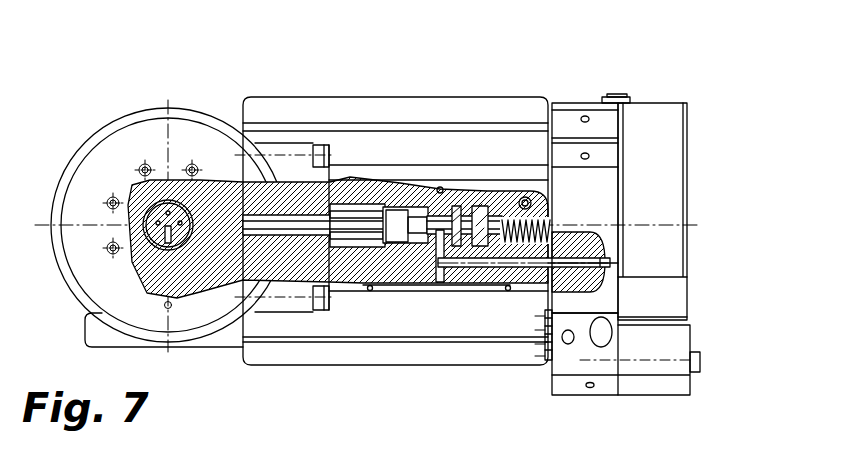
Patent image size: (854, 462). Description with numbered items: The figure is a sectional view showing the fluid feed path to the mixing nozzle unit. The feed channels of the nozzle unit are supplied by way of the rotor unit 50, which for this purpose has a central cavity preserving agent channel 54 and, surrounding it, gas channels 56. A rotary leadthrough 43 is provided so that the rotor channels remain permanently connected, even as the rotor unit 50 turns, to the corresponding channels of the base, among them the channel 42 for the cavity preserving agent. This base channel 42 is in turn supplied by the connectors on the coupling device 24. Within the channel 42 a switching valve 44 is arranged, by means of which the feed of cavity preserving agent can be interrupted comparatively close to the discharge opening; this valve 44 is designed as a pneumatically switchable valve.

The coupling device 24 is at (728, 245).
The channel of the base for cavity preserving agent 42 is at (525, 265).
The rotary leadthrough 43 is at (195, 205).
The switching valve 44 is at (443, 227).
The rotor unit 50 is at (163, 236).
The cavity preserving agent channel 54 is at (175, 250).
The gas channels 56 is at (157, 224).